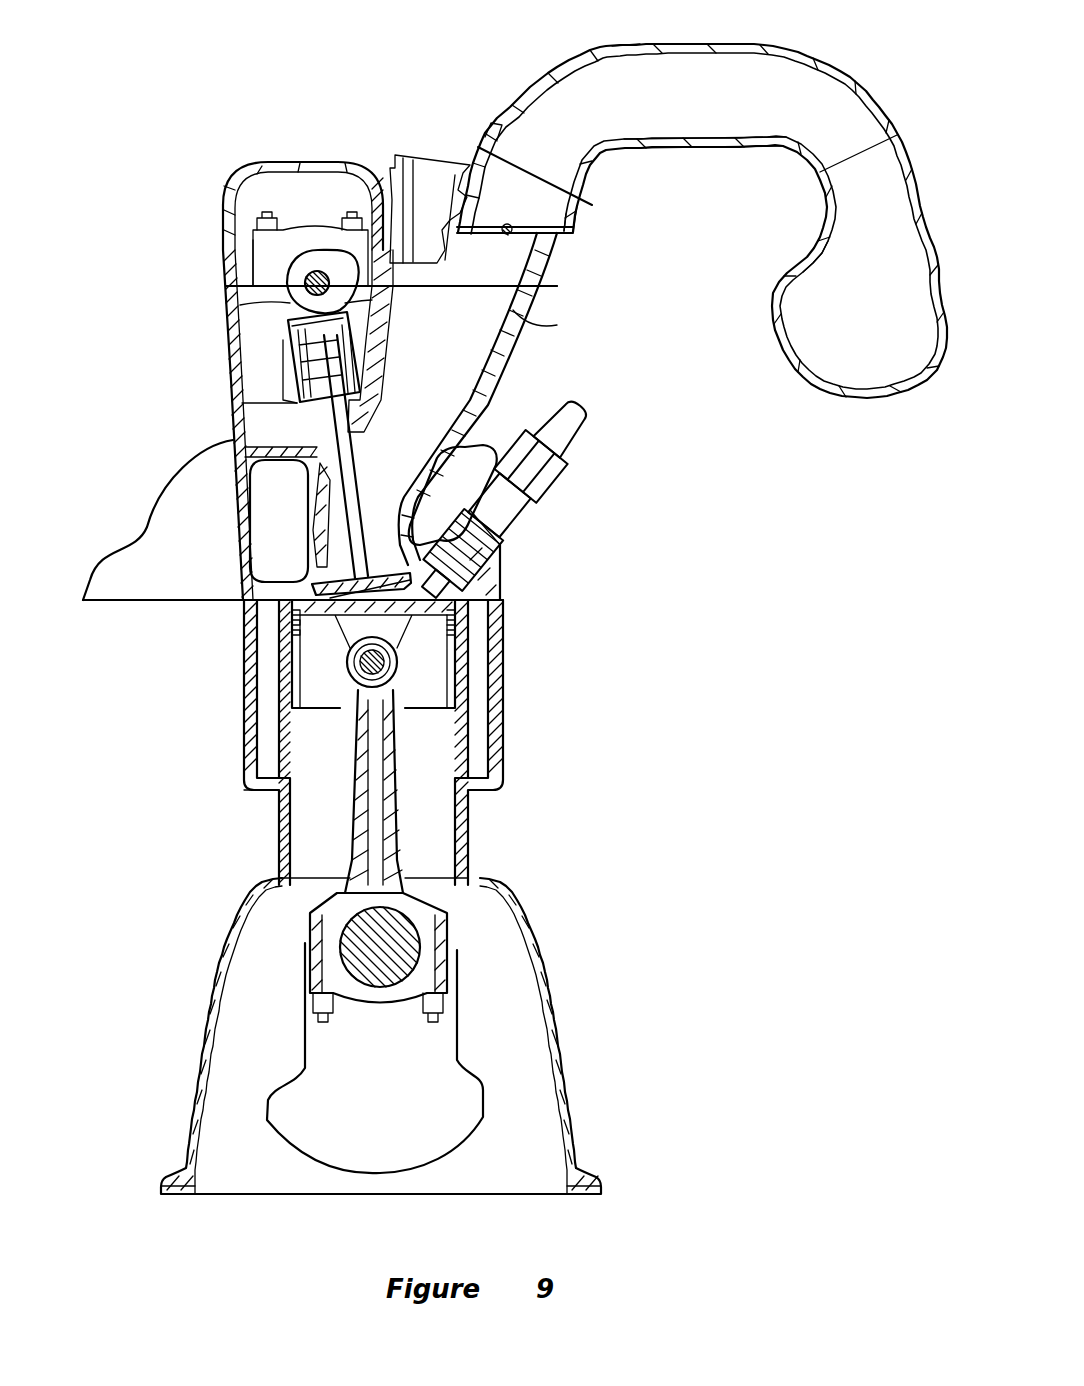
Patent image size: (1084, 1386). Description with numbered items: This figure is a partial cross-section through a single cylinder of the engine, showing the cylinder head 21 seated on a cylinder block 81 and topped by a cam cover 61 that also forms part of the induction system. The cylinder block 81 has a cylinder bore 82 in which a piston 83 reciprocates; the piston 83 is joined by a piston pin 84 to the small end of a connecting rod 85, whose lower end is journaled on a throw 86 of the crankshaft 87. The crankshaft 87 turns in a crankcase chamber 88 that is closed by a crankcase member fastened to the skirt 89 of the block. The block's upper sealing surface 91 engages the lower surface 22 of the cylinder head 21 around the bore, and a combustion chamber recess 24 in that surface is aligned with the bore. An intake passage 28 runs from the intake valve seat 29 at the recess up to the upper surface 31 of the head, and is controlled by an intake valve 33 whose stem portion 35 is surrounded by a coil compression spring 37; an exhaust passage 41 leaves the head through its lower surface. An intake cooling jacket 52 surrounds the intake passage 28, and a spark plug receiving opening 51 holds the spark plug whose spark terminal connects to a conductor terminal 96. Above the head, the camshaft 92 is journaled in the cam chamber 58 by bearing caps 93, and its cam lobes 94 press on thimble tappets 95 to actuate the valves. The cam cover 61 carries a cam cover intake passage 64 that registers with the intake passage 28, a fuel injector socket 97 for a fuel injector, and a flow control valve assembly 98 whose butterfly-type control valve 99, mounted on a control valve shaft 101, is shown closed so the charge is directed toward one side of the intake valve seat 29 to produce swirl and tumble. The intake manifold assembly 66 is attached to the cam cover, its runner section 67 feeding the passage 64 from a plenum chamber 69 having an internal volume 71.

The cylinder head 21 is at (138, 394).
The lower surface 22 is at (470, 617).
The combustion chamber recess 24 is at (394, 602).
The intake passage 28 is at (480, 322).
The intake valve seat 29 is at (300, 545).
The upper surface 31 is at (226, 280).
The intake valve 33 is at (361, 502).
The stem portion 35 is at (374, 442).
The coil compression spring 37 is at (300, 395).
The exhaust passage 41 is at (150, 530).
The spark plug receiving opening 51 is at (463, 555).
The intake cooling jacket 52 is at (265, 485).
The cam chamber 58 is at (300, 208).
The cam cover 61 is at (218, 173).
The cam cover intake passage 64 is at (487, 192).
The intake manifold assembly 66 is at (642, 46).
The runner section 67 is at (688, 46).
The plenum chamber 69 is at (680, 147).
The internal volume 71 is at (870, 298).
The cylinder block 81 is at (163, 763).
The cylinder bore 82 is at (445, 820).
The piston 83 is at (325, 715).
The piston pin 84 is at (347, 662).
The connecting rod 85 is at (350, 818).
The throw 86 is at (380, 990).
The crankshaft 87 is at (266, 1105).
The crankcase chamber 88 is at (500, 1034).
The skirt 89 is at (562, 1085).
The upper sealing surface 91 is at (265, 585).
The camshaft 92 is at (305, 288).
The bearing cap 93 is at (268, 250).
The cam lobe 94 is at (330, 275).
The thimble tappet 95 is at (290, 333).
The conductor terminal 96 is at (550, 455).
The fuel injector socket 97 is at (418, 225).
The flow control valve assembly 98 is at (600, 228).
The control valve 99 is at (540, 237).
The control valve shaft 101 is at (513, 233).